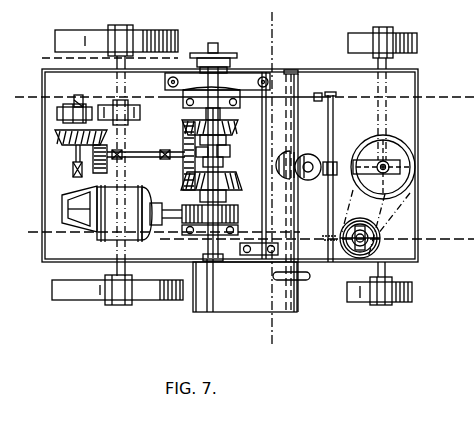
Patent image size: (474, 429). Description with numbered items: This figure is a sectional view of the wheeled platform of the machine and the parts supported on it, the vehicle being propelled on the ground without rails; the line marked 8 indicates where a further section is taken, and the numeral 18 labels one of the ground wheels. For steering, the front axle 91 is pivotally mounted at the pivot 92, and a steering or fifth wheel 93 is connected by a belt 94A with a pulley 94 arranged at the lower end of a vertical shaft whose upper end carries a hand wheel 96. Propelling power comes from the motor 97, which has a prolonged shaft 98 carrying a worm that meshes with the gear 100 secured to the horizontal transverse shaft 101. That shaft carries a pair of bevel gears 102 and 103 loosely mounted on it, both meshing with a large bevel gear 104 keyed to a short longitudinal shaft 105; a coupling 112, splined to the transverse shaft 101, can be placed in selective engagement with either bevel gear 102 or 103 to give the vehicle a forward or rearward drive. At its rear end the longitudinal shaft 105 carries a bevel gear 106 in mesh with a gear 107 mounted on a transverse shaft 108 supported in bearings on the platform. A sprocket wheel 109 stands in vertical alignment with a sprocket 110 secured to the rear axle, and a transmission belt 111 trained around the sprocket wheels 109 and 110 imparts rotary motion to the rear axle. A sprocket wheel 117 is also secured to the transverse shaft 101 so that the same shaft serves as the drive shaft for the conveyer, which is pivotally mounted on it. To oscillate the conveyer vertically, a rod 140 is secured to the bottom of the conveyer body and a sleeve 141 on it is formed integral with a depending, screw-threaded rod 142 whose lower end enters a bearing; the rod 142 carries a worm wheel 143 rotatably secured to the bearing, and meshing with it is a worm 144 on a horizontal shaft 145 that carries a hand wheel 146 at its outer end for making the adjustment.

The section line 8- 8 is at (276, 25).
The front wheel 18 is at (52, 45).
The front axle 91 is at (386, 306).
The pivot 92 is at (390, 163).
The steering wheel (fifth wheel) 93 is at (415, 190).
The pulley 94 is at (356, 260).
The belt 94A is at (392, 208).
The hand wheel 96 is at (342, 243).
The motor 97 is at (96, 236).
The prolonged shaft 98 is at (166, 218).
The gear 100 is at (228, 205).
The horizontal transverse shaft 101 is at (225, 76).
The bevel gear 102 is at (231, 126).
The bevel gear 103 is at (228, 180).
The large bevel gear 104 is at (183, 170).
The short longitudinal shaft 105 is at (122, 152).
The bevel gear 106 is at (100, 171).
The gear 107 is at (70, 145).
The transverse shaft 108 is at (73, 170).
The sprocket wheel 109 is at (77, 107).
The sprocket 110 is at (135, 108).
The transmission belt 111 is at (88, 106).
The coupling 112 is at (229, 152).
The sprocket wheel 117 is at (222, 55).
The rod 140 is at (334, 131).
The sleeve 141 is at (332, 160).
The depending rod 142 is at (298, 180).
The worm wheel 143 is at (309, 154).
The worm 144 is at (288, 155).
The horizontal shaft 145 is at (296, 201).
The hand wheel 146 is at (298, 281).